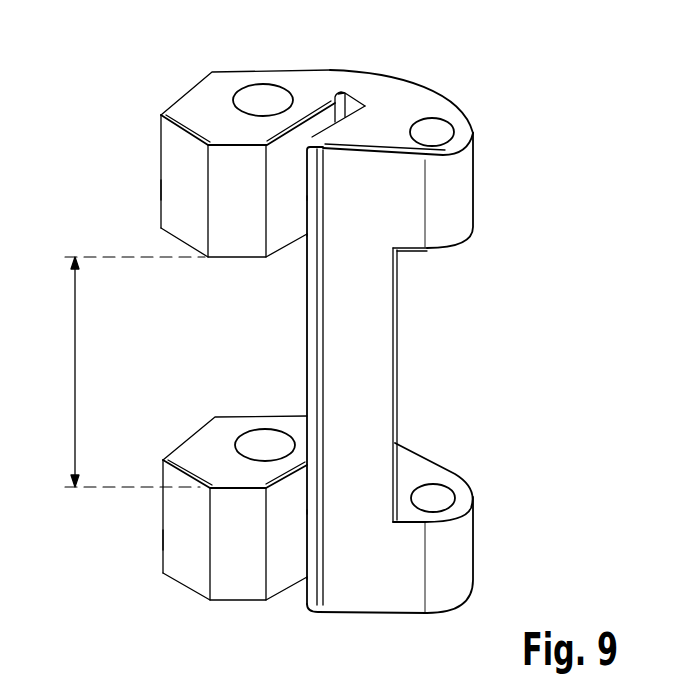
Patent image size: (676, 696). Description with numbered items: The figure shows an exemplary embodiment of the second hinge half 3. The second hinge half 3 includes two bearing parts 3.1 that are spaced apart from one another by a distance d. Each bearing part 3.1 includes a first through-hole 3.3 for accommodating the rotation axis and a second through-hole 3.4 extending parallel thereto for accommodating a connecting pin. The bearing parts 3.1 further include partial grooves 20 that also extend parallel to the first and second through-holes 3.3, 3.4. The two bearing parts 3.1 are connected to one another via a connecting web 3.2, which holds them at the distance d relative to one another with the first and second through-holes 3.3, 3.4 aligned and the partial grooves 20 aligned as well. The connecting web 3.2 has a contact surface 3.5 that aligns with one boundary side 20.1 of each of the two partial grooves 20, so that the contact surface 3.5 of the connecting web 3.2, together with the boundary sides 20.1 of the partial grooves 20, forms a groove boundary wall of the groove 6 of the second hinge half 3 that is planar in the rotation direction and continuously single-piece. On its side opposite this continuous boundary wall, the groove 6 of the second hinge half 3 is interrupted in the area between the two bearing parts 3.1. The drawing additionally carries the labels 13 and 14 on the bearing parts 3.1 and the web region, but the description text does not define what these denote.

The second hinge half 3 is at (534, 77).
The bearing part 3.1 is at (208, 106).
The connecting web 3.2 is at (367, 303).
The first through-hole 3.3 is at (433, 130).
The second through-hole 3.4 is at (268, 100).
The contact surface 3.5 is at (307, 340).
The groove 6 is at (359, 89).
The side face 13 is at (182, 186).
The edge 14 is at (295, 192).
The partial groove 20 is at (286, 230).
The boundary side 20.1 is at (325, 121).
The distance d is at (73, 372).